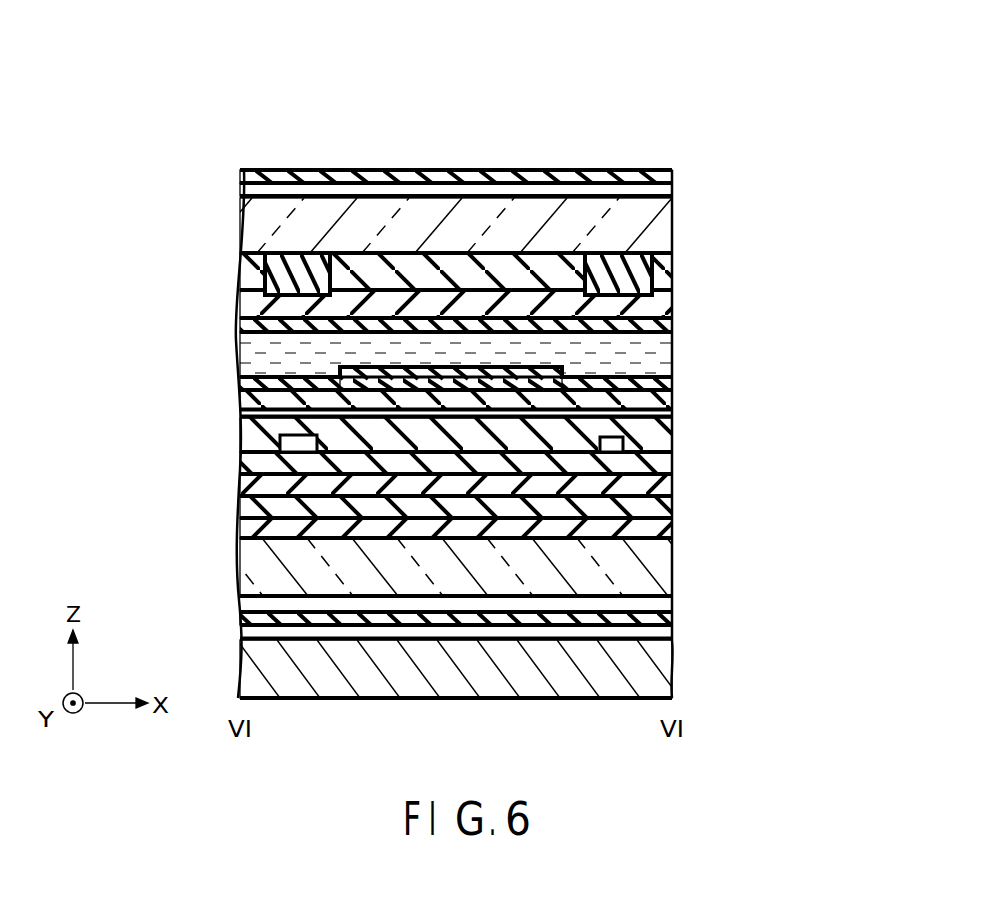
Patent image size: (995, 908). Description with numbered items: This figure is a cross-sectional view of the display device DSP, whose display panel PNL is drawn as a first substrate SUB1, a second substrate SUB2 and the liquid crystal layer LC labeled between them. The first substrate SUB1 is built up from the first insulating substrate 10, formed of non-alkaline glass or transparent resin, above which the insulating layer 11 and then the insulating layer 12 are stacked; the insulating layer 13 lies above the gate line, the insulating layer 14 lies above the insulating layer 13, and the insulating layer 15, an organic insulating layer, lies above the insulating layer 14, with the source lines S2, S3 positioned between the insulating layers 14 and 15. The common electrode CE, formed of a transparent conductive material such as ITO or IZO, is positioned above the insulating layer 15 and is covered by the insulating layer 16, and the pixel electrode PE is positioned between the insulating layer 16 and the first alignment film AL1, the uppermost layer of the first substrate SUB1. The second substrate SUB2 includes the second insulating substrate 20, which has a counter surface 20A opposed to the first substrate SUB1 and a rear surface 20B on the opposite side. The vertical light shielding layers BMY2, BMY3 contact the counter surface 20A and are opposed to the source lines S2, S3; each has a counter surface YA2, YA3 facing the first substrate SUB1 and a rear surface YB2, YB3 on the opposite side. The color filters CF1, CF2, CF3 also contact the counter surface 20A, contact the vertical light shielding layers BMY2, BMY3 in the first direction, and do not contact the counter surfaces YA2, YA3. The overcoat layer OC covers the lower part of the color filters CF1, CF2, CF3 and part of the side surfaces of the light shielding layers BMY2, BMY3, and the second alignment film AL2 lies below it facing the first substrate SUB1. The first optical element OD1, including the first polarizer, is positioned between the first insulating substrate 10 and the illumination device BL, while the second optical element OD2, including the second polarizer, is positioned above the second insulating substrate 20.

The display device DSP is at (476, 386).
The display panel PNL is at (472, 386).
The first substrate SUB1 is at (416, 551).
The second substrate SUB2 is at (444, 169).
The liquid crystal layer LC is at (246, 346).
The first insulating substrate 10 is at (660, 566).
The insulating layer 11 is at (665, 530).
The insulating layer 12 is at (665, 510).
The insulating layer 13 is at (665, 485).
The insulating layer 14 is at (660, 452).
The insulating layer 15 is at (655, 437).
The insulating layer 16 is at (655, 398).
The common electrode CE is at (248, 414).
The pixel electrode PE is at (515, 372).
The first alignment film AL1 is at (489, 362).
The second alignment film AL2 is at (660, 324).
The source line S2 is at (298, 440).
The source line S3 is at (610, 440).
The second insulating substrate 20 is at (480, 181).
The counter surface 20A is at (400, 270).
The rear surface 20B is at (413, 178).
The color filter CF1 is at (250, 262).
The color filter CF2 is at (466, 266).
The color filter CF3 is at (655, 263).
The vertical light shielding layer BMY2 is at (306, 266).
The vertical light shielding layer BMY3 is at (625, 268).
The overcoat layer OC is at (667, 310).
The counter surface YA2 is at (263, 320).
The counter surface YA3 is at (588, 320).
The rear surface YB2 is at (296, 236).
The rear surface YB3 is at (614, 137).
The first optical element OD1 is at (670, 619).
The second optical element OD2 is at (672, 177).
The illumination device BL is at (652, 678).